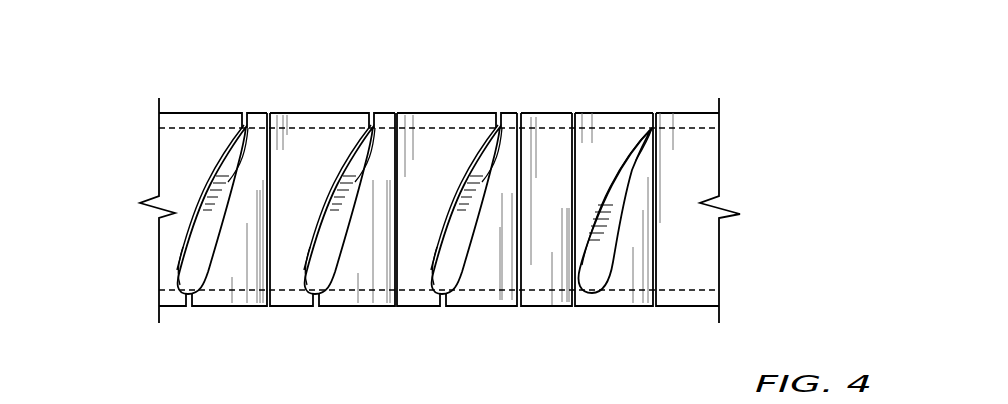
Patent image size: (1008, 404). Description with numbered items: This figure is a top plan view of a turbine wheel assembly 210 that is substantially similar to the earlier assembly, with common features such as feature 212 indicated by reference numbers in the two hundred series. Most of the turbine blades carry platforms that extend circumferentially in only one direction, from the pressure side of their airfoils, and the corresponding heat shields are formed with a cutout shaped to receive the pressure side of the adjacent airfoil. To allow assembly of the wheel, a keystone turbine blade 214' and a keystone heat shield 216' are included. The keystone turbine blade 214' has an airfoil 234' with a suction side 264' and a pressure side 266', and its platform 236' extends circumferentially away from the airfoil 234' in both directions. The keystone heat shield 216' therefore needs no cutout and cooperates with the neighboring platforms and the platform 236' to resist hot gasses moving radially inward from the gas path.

The turbine wheel assembly 210 is at (766, 55).
The common feature of the turbine wheel assembly 212 is at (175, 158).
The keystone turbine blade 214' is at (627, 56).
The keystone heat shield 216' is at (533, 348).
The keystone airfoil 234' is at (616, 163).
The keystone platform 236' is at (605, 315).
The suction side of keystone airfoil 264' is at (591, 163).
The pressure side of keystone airfoil 266' is at (678, 91).